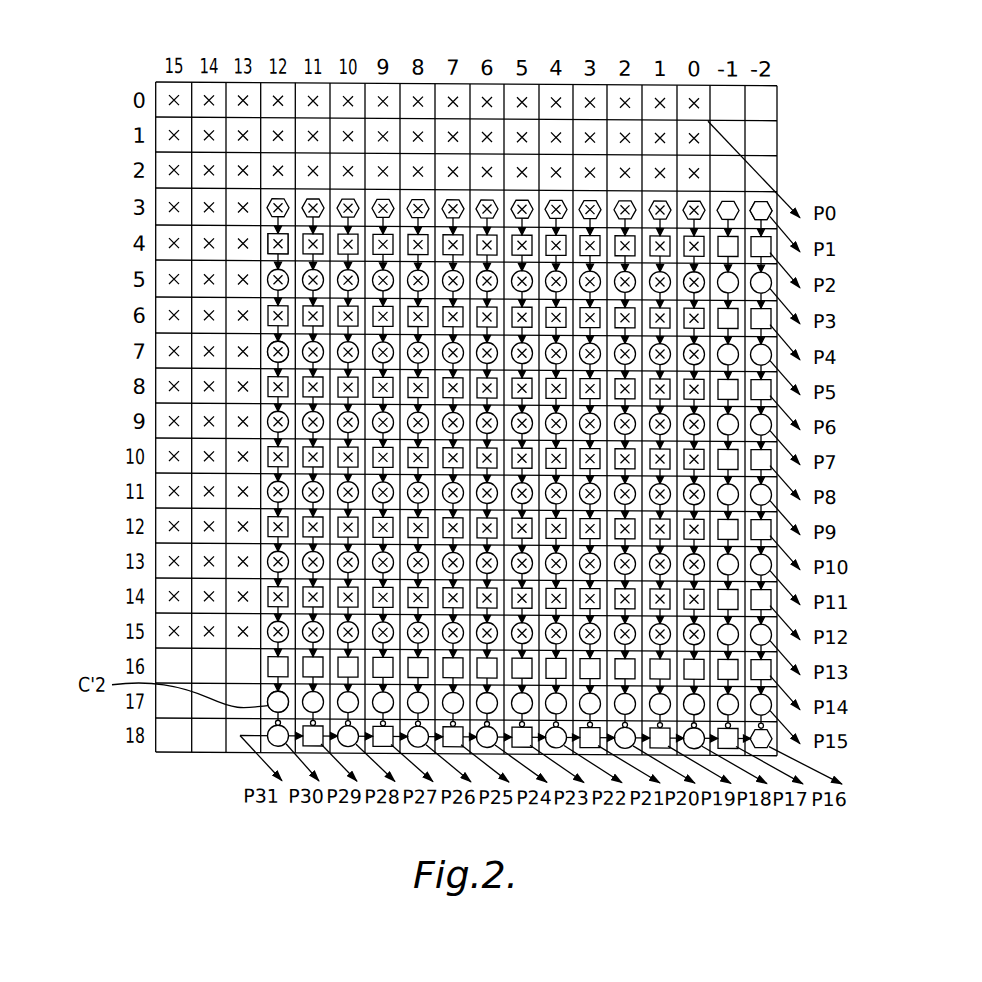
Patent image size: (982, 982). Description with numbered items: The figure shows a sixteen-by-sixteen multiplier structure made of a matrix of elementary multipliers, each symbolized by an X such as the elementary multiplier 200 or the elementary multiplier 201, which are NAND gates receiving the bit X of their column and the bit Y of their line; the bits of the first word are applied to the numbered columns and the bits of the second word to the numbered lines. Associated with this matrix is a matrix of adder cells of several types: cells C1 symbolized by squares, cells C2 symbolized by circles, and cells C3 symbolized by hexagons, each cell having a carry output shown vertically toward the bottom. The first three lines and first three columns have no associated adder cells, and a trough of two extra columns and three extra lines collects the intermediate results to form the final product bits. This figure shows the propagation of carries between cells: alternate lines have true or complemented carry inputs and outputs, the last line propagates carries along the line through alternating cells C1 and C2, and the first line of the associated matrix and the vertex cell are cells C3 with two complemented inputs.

The elementary multiplier 200 is at (557, 92).
The elementary multiplier 201 is at (693, 92).
The adder cell of the first type C1 is at (267, 240).
The adder cell of the second type C2 is at (268, 351).
The adder cell of the third type C3 is at (767, 197).